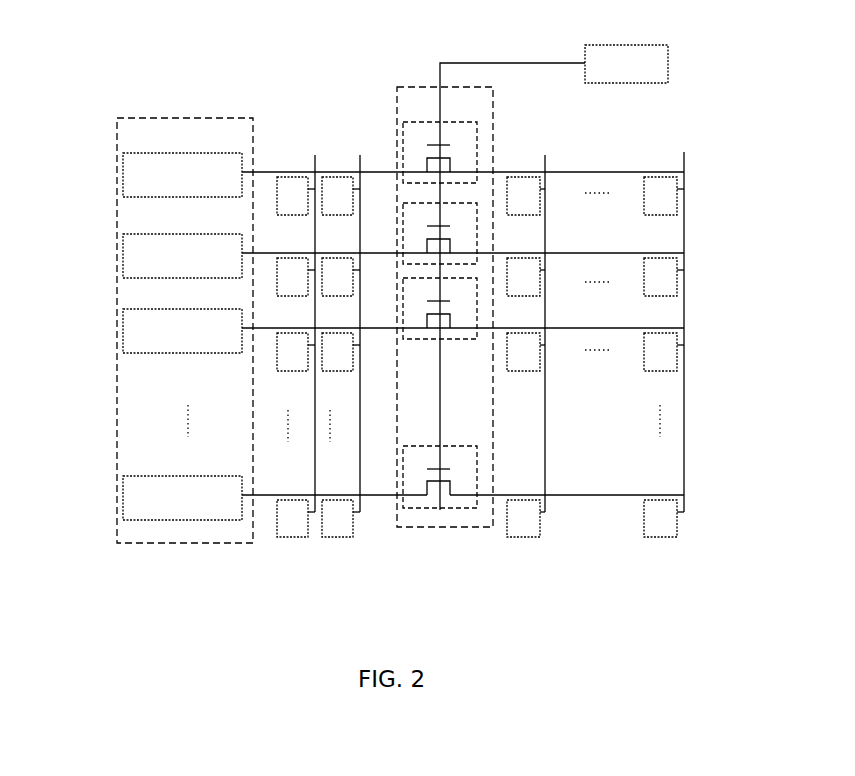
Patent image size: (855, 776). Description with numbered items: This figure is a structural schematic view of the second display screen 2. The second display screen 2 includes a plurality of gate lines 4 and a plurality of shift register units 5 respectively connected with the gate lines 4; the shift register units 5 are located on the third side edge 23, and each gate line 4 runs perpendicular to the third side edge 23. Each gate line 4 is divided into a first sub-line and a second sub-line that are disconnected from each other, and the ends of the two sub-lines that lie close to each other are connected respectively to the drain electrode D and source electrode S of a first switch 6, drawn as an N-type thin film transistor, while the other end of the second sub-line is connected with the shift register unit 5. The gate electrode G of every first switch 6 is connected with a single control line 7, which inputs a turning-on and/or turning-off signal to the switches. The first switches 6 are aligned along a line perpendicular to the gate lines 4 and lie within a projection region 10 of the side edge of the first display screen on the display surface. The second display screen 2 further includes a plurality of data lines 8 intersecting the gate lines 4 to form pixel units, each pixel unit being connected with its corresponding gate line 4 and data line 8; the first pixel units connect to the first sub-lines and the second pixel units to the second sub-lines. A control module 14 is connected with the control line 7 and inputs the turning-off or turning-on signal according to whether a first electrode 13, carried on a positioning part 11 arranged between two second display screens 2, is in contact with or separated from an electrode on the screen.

The second display screen 2 is at (123, 52).
The third side edge 23 is at (233, 118).
The shift register unit 5 is at (122, 163).
The data line 8 is at (315, 158).
The projection region 10 is at (397, 87).
The control line 7 is at (440, 115).
The first switch 6 is at (478, 157).
The control module 14 is at (658, 83).
The gate line 4 is at (538, 565).
The first electrode 13 is at (367, 495).
The positioning part 11 is at (590, 495).